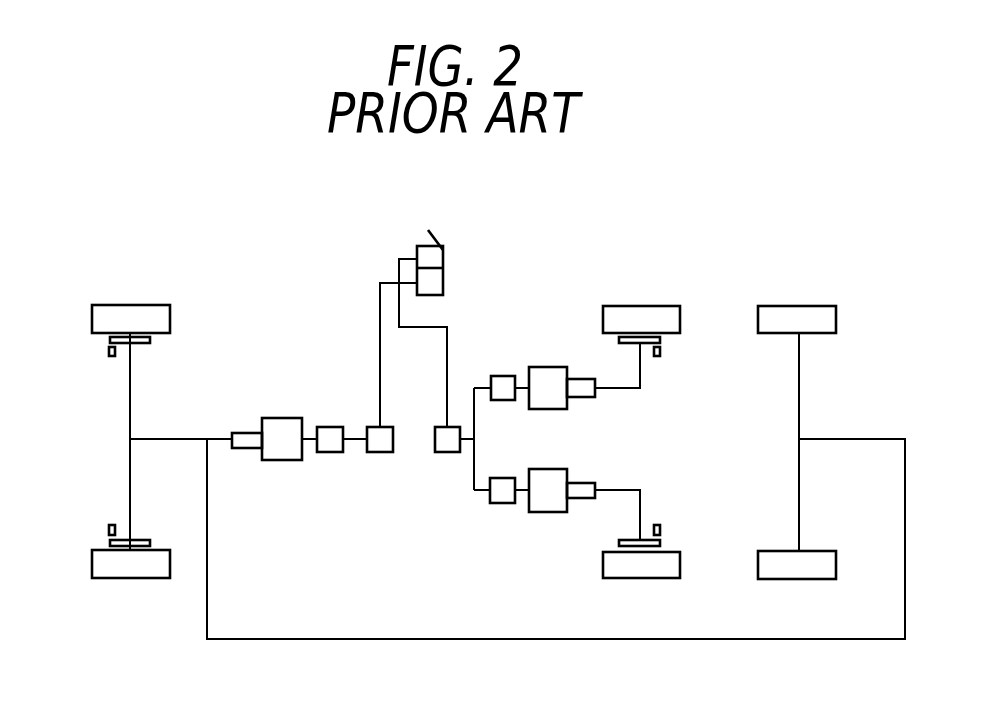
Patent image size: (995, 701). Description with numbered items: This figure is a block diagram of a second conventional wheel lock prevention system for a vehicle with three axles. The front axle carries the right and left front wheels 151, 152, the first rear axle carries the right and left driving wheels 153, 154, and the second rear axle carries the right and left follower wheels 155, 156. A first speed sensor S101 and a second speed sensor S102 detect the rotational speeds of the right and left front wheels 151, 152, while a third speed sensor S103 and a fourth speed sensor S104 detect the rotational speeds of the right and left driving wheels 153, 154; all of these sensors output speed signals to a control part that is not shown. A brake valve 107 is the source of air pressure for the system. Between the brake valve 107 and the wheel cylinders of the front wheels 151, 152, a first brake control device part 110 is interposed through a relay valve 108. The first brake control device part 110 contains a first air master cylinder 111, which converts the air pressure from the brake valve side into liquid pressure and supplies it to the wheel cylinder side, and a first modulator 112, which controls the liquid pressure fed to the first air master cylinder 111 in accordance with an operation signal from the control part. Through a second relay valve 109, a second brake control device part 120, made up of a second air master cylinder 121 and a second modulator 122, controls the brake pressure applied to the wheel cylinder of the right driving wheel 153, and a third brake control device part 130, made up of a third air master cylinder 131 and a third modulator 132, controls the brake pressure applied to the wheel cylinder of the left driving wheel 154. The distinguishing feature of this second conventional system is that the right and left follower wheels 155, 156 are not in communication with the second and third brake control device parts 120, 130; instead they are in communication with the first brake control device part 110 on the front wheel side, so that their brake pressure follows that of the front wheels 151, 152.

The brake valve 107 is at (440, 247).
The relay valve 108 is at (380, 452).
The relay valve 109 is at (445, 452).
The first brake control device part 110 is at (307, 402).
The first air master cylinder 111 is at (270, 455).
The first modulator 112 is at (327, 448).
The second brake control device part 120 is at (546, 522).
The second air master cylinder 121 is at (549, 477).
The second modulator 122 is at (500, 506).
The third brake control device part 130 is at (530, 349).
The third air master cylinder 131 is at (547, 378).
The third modulator 132 is at (497, 376).
The right front wheel 151 is at (130, 570).
The left front wheel 152 is at (122, 318).
The right driving wheel 153 is at (640, 577).
The left driving wheel 154 is at (640, 312).
The right follower wheel 155 is at (800, 577).
The left follower wheel 156 is at (797, 312).
The first speed sensor S101 is at (110, 527).
The second speed sensor S102 is at (108, 353).
The third speed sensor S103 is at (658, 524).
The fourth speed sensor S104 is at (660, 354).